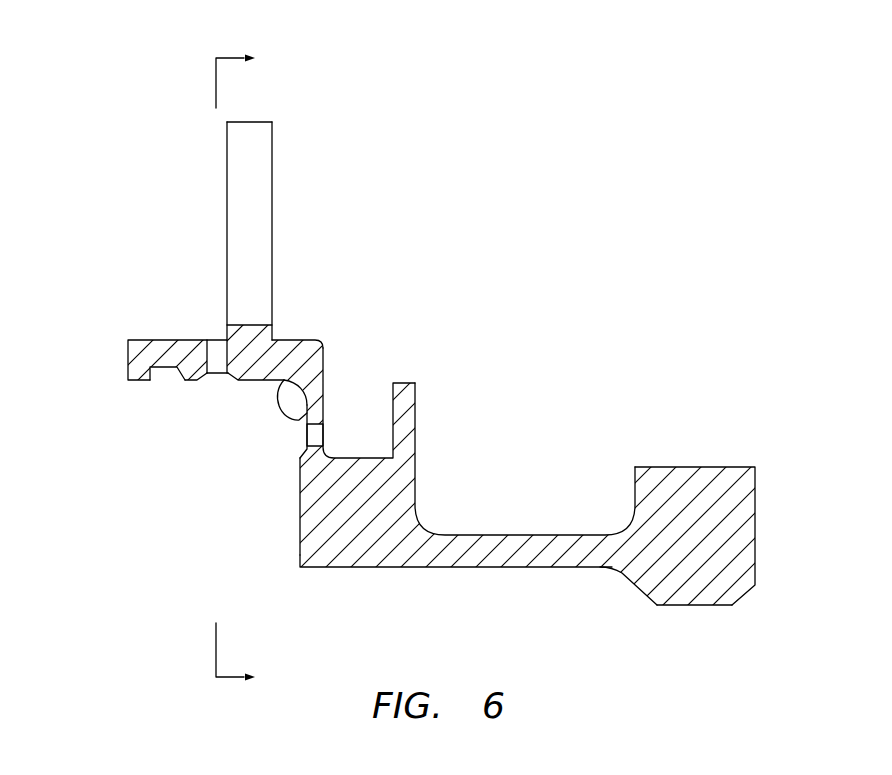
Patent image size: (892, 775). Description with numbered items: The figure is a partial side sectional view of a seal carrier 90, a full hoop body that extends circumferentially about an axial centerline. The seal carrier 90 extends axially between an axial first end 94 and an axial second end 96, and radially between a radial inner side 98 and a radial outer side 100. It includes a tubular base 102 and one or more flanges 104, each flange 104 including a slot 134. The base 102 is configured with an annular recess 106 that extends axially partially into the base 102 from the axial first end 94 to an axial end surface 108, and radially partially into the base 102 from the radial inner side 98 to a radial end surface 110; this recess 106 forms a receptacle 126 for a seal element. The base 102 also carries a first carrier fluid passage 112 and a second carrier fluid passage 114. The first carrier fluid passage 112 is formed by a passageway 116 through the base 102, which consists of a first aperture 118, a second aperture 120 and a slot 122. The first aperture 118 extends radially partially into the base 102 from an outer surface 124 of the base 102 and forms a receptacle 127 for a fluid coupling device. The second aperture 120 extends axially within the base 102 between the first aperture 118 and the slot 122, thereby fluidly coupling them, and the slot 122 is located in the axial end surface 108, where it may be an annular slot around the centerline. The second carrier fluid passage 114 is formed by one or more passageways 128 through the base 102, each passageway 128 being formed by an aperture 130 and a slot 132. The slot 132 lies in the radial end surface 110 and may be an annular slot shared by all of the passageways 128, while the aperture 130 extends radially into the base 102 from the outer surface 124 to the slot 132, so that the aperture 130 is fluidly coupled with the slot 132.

The seal carrier 90 is at (519, 163).
The axial first end 94 is at (128, 357).
The axial second end 96 is at (755, 536).
The radial inner side 98 is at (685, 605).
The radial outer side 100 is at (260, 122).
The tubular base 102 is at (286, 532).
The flange 104 is at (274, 149).
The annular recess 106 is at (165, 535).
The axial end surface 108 is at (299, 553).
The radial end surface 110 is at (142, 381).
The first carrier fluid passage 112 is at (217, 464).
The second carrier fluid passage 114 is at (161, 428).
The passageway 116 is at (295, 456).
The first aperture 118 is at (398, 383).
The second aperture 120 is at (318, 437).
The slot 122 is at (284, 380).
The outer surface 124 is at (313, 340).
The receptacle 126 is at (103, 515).
The receptacle 127 is at (366, 395).
The passageway 128 is at (208, 388).
The aperture 130 is at (215, 348).
The slot 132 is at (220, 378).
The slot 134 is at (252, 227).